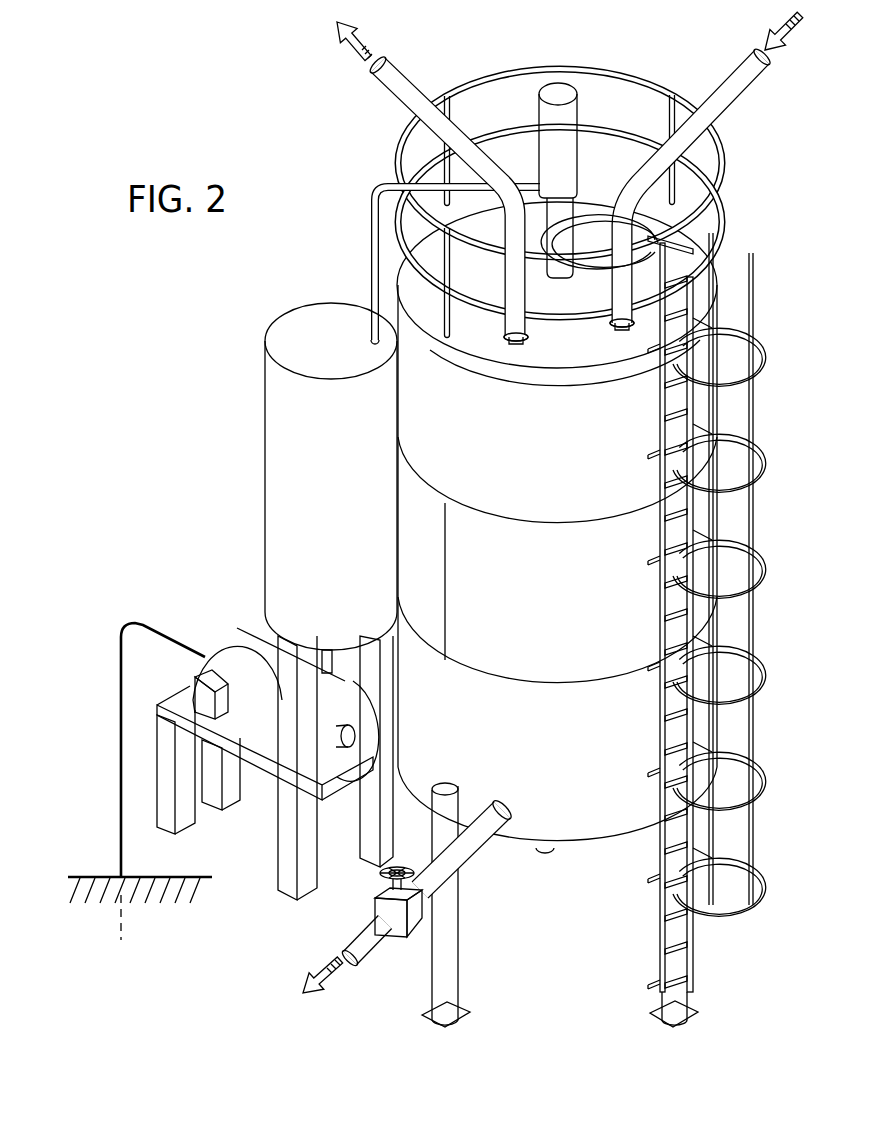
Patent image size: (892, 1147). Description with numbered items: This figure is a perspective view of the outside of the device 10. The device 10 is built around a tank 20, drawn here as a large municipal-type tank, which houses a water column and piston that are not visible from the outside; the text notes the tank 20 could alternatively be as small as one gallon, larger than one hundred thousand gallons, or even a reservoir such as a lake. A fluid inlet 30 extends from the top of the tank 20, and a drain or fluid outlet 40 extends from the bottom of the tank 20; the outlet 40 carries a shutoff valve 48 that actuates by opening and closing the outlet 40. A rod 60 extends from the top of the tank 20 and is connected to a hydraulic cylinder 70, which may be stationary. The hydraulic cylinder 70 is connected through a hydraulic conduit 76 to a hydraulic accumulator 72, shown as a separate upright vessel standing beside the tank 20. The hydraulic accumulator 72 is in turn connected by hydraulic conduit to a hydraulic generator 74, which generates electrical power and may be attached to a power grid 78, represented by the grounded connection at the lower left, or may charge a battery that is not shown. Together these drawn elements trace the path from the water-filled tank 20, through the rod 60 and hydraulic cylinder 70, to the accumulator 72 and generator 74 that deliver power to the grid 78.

The device 10 is at (236, 104).
The tank 20 is at (617, 443).
The fluid inlet 30 is at (735, 83).
The drain or fluid outlet 40 is at (465, 838).
The shutoff valve 48 is at (413, 918).
The rod 60 is at (565, 227).
The hydraulic cylinder 70 is at (565, 117).
The hydraulic accumulator 72 is at (283, 460).
The hydraulic generator 74 is at (253, 648).
The hydraulic conduit 76 is at (372, 257).
The power grid 78 is at (118, 745).